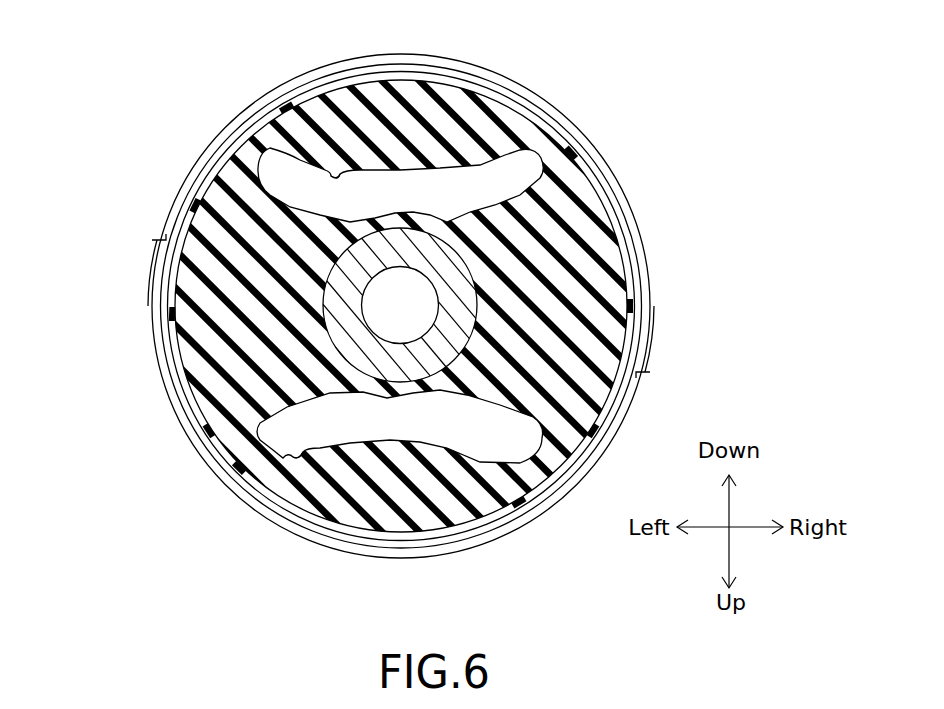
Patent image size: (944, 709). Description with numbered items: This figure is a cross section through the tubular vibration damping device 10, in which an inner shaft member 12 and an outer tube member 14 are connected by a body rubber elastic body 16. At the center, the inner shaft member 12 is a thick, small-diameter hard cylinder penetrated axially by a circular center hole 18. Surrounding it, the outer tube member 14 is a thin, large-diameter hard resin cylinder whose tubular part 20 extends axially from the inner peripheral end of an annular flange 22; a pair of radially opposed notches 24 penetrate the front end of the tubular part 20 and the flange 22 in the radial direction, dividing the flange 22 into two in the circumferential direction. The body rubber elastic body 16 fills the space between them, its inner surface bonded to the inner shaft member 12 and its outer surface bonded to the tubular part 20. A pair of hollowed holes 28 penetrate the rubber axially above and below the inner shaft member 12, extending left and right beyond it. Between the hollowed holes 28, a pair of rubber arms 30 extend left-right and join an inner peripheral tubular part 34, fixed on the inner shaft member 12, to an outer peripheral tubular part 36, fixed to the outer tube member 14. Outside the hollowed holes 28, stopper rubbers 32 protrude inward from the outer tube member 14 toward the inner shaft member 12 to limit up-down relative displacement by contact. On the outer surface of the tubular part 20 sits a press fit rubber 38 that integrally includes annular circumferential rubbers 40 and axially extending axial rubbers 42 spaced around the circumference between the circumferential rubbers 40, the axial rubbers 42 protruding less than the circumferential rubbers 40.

The tubular vibration damping device 10 is at (646, 133).
The inner shaft member 12 is at (470, 262).
The outer tube member 14 is at (590, 452).
The body rubber elastic body 16 is at (336, 519).
The center hole 18 is at (401, 269).
The tubular part 20 is at (540, 482).
The flange 22 is at (622, 440).
The notch 24 is at (152, 240).
The hollowed hole 28 is at (335, 176).
The rubber arm 30 is at (562, 276).
The stopper rubber 32 is at (411, 124).
The inner peripheral tubular part 34 is at (410, 388).
The outer peripheral tubular part 36 is at (272, 146).
The press fit rubber 38 is at (160, 326).
The circumferential rubber 40 is at (182, 211).
The axial rubber 42 is at (286, 110).